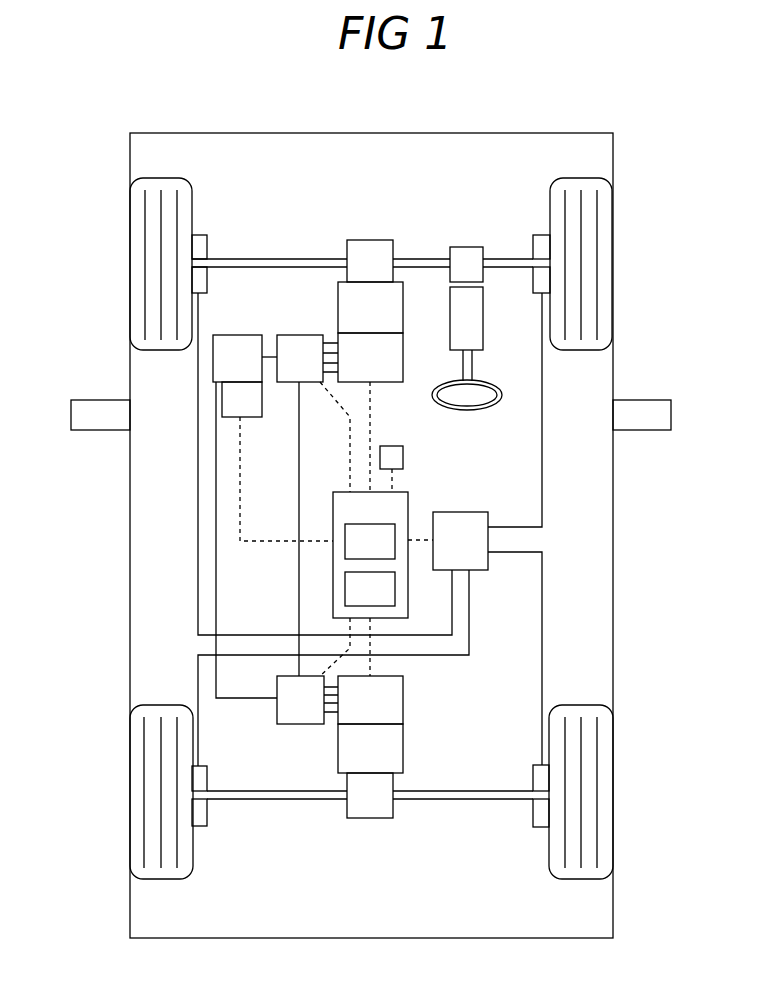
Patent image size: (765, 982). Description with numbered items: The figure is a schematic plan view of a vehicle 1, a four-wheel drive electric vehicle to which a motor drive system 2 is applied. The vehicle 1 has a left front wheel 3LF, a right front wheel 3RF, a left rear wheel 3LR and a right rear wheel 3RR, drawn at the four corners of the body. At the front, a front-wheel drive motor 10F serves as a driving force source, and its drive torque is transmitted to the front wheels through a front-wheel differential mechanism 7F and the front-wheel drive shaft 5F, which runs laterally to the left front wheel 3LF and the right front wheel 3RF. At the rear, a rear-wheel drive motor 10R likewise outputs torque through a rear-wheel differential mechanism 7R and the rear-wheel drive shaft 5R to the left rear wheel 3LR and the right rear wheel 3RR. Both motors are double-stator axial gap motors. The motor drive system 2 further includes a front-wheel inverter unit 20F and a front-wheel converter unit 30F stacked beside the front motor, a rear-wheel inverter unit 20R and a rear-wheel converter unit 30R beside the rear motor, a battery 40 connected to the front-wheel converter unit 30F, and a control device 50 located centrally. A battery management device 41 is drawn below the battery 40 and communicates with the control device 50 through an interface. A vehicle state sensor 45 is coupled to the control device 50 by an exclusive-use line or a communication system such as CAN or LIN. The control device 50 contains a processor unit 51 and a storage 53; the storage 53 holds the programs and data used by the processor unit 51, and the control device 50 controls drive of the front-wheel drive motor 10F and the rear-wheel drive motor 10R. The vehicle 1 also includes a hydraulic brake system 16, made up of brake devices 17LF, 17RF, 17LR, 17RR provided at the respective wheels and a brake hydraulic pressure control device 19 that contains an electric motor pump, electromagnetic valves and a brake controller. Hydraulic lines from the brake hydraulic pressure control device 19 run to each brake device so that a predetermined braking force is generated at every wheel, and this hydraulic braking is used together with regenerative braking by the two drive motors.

The vehicle 1 is at (618, 129).
The motor drive system 2 is at (338, 311).
The left front wheel 3LF is at (130, 233).
The right front wheel 3RF is at (608, 233).
The left rear wheel 3LR is at (130, 812).
The right rear wheel 3RR is at (607, 810).
The front-wheel drive shaft 5F is at (230, 268).
The rear-wheel drive shaft 5R is at (273, 800).
The front-wheel differential mechanism 7F is at (370, 261).
The rear-wheel differential mechanism 7R is at (370, 795).
The front-wheel drive motor 10F is at (370, 307).
The rear-wheel drive motor 10R is at (370, 748).
The hydraulic brake system 16 is at (481, 515).
The brake device 17LF is at (208, 243).
The brake device 17RF is at (530, 243).
The brake device 17LR is at (207, 823).
The brake device 17RR is at (533, 823).
The brake hydraulic pressure control device 19 is at (474, 507).
The front-wheel inverter unit 20F is at (370, 357).
The rear-wheel inverter unit 20R is at (370, 700).
The front-wheel converter unit 30F is at (297, 330).
The rear-wheel converter unit 30R is at (300, 700).
The battery 40 is at (245, 516).
The battery management device 41 is at (277, 461).
The vehicle state sensor 45 is at (392, 446).
The control device 50 is at (376, 529).
The processor unit 51 is at (370, 541).
The storage 53 is at (370, 589).